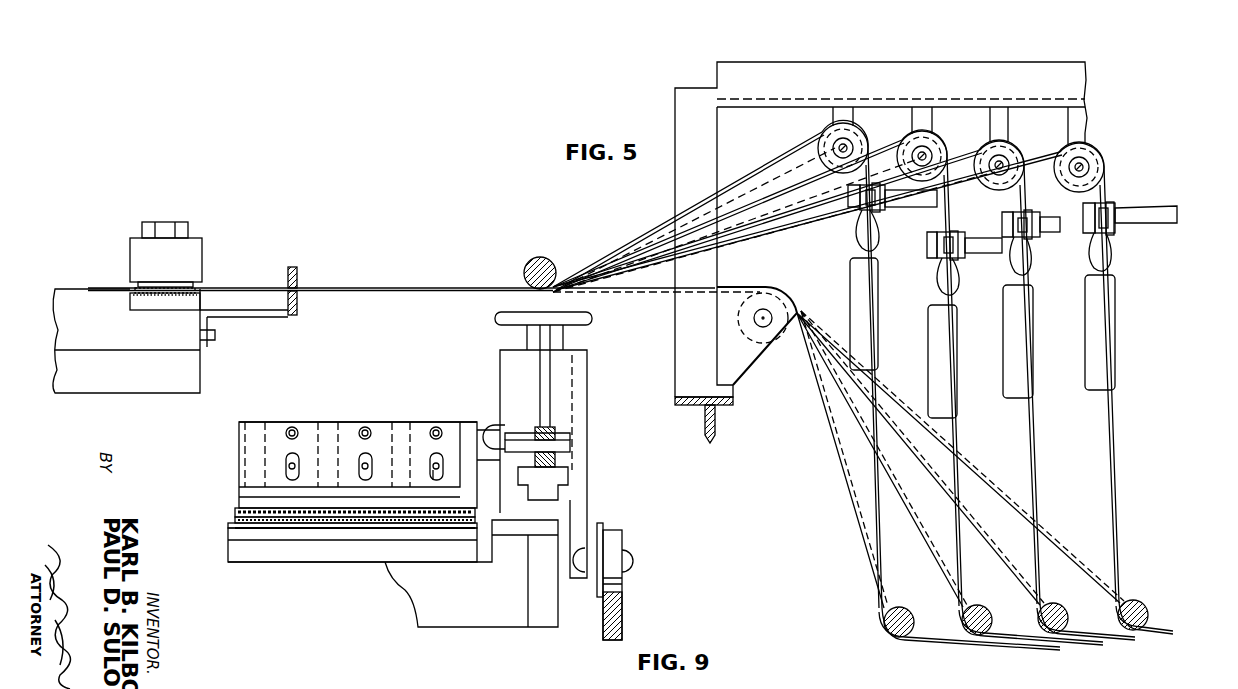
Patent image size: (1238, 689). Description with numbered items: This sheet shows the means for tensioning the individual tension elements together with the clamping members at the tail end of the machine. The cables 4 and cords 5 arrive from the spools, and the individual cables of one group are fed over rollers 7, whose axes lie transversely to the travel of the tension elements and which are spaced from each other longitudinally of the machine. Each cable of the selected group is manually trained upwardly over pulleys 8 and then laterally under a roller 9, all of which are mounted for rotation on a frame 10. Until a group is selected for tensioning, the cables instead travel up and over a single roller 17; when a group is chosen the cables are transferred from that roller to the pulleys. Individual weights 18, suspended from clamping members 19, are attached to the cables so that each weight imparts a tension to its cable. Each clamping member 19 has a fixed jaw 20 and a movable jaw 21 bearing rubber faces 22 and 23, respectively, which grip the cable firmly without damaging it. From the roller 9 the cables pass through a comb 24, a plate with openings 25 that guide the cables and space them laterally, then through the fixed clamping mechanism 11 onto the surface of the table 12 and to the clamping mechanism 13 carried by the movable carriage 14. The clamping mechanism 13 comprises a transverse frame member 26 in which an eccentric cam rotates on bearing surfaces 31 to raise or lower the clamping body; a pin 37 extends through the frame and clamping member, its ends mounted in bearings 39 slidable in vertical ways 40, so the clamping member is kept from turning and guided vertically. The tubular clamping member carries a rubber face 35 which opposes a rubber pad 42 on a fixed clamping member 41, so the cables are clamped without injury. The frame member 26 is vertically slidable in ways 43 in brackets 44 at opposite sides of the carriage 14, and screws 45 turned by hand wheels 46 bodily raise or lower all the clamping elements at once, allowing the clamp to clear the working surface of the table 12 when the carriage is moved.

In FIG. 5, the cables 4 is at (416, 288).
In FIG. 9, the cables 4 is at (268, 530).
In FIG. 9, the cords 5 is at (235, 520).
In FIG. 5, the rollers 7 is at (900, 610).
In FIG. 5, the pulleys 8 is at (826, 131).
In FIG. 5, the roller 9 is at (535, 258).
In FIG. 5, the frame 10 is at (855, 62).
In FIG. 5, the clamping mechanism 11 is at (195, 250).
In FIG. 5, the table 12 is at (170, 335).
In FIG. 9, the table 12 is at (470, 590).
In FIG. 9, the clamping mechanism 13 is at (256, 400).
In FIG. 9, the carriage 14 is at (585, 505).
In FIG. 5, the roller 17 is at (768, 338).
In FIG. 5, the weights 18 is at (878, 290).
In FIG. 5, the clamping members 19 is at (922, 204).
In FIG. 5, the fixed jaw 20 is at (880, 210).
In FIG. 5, the movable jaw 21 is at (862, 207).
In FIG. 5, the rubber face 22 is at (876, 196).
In FIG. 5, the rubber face 23 is at (860, 207).
In FIG. 5, the comb 24 is at (296, 268).
In FIG. 5, the openings 25 is at (297, 295).
In FIG. 9, the frame member 26 is at (345, 422).
In FIG. 9, the bearing surfaces 31 is at (293, 427).
In FIG. 5, the rubber face 35 is at (140, 288).
In FIG. 9, the rubber face 35 is at (235, 510).
In FIG. 9, the pin 37 is at (437, 462).
In FIG. 9, the bearings 39 is at (285, 468).
In FIG. 9, the vertical ways 40 is at (289, 462).
In FIG. 9, the fixed clamping member 41 is at (310, 563).
In FIG. 5, the rubber pad 42 is at (135, 299).
In FIG. 9, the rubber pad 42 is at (233, 527).
In FIG. 9, the ways 43 is at (490, 428).
In FIG. 9, the brackets 44 is at (570, 385).
In FIG. 9, the screws 45 is at (572, 440).
In FIG. 9, the hand wheels 46 is at (592, 320).